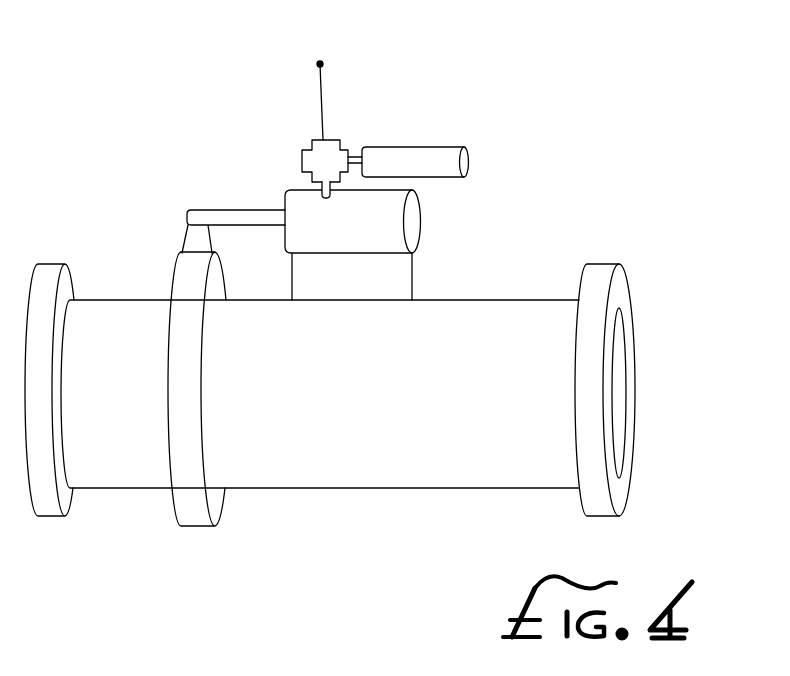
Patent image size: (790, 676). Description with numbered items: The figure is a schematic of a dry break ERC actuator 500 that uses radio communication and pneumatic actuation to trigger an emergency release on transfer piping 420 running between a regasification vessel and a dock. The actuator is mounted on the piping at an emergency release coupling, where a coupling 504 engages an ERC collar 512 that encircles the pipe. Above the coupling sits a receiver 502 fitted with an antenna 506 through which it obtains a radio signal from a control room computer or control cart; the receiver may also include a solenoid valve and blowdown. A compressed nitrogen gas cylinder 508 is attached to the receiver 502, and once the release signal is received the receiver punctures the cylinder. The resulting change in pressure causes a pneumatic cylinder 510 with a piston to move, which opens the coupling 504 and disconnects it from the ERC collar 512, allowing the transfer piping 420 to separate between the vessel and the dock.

The dry break ERC actuator 500 is at (369, 296).
The receiver 502 is at (332, 153).
The coupling 504 is at (195, 233).
The antenna 506 is at (320, 64).
The compressed nitrogen gas cylinder 508 is at (442, 147).
The pneumatic cylinder 510 is at (412, 222).
The ERC collar 512 is at (190, 507).
The transfer piping 420 is at (617, 263).